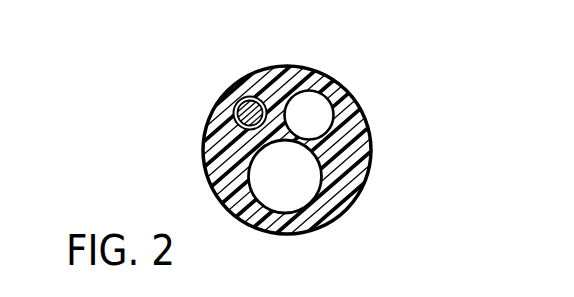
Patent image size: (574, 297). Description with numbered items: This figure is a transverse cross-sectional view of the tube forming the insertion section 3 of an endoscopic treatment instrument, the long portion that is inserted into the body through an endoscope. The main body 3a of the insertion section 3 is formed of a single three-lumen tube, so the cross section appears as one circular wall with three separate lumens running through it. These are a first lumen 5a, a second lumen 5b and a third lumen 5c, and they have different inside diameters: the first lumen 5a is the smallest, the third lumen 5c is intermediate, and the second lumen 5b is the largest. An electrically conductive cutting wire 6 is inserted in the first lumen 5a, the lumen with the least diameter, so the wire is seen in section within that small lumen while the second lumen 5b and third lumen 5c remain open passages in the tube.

The insertion section 3 is at (377, 102).
The main body 3a is at (369, 153).
The first lumen 5a is at (238, 100).
The second lumen 5b is at (331, 217).
The third lumen 5c is at (323, 89).
The cutting wire 6 is at (233, 113).